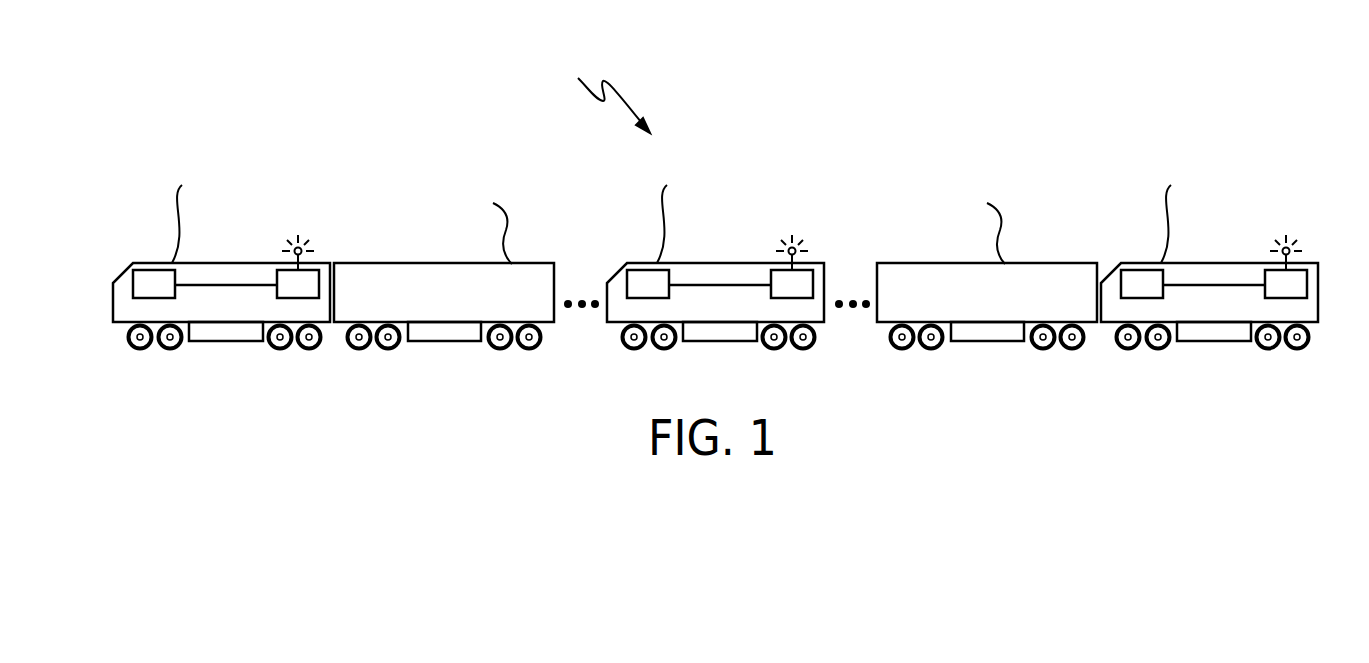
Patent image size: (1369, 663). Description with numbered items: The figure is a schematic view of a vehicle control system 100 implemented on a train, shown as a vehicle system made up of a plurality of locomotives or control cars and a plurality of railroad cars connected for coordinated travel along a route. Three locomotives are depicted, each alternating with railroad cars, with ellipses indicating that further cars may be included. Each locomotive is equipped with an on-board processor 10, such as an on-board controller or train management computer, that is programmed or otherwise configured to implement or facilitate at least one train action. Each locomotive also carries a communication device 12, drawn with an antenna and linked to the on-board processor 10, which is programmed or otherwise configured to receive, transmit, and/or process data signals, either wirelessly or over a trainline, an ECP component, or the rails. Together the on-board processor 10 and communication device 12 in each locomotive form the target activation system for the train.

The train system 100 is at (1033, 54).
The on-board processor 10 is at (143, 287).
The communication device 12 is at (320, 279).